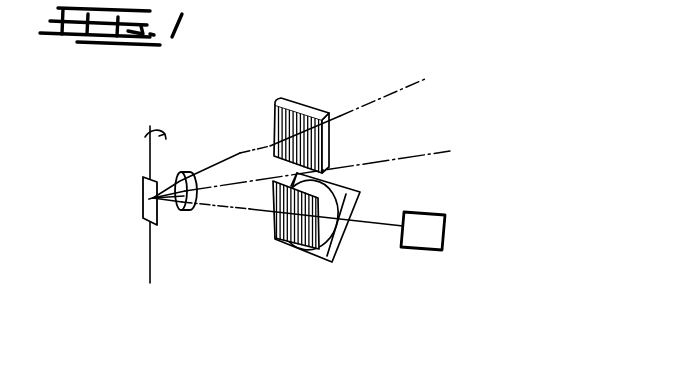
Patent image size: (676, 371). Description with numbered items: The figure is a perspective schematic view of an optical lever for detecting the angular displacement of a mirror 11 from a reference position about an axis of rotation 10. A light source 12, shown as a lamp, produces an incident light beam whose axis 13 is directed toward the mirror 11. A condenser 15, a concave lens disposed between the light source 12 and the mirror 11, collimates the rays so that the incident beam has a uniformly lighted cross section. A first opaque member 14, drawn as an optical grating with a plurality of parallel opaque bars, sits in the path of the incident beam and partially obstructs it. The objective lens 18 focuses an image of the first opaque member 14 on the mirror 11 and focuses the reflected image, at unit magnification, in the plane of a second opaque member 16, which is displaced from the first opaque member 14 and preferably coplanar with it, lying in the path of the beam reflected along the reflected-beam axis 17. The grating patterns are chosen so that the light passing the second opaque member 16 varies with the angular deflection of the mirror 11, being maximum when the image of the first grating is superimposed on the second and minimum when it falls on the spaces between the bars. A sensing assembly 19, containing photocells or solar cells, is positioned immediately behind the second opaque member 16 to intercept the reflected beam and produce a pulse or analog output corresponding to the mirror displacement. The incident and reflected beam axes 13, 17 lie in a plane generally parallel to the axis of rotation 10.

The axis of rotation 10 is at (148, 238).
The mirror 11 is at (143, 178).
The light source 12 is at (427, 218).
The axis of the incident light beam 13 is at (248, 212).
The first opaque member 14 is at (271, 236).
The condenser 15 is at (362, 193).
The second opaque member 16 is at (273, 111).
The axis of the reflected light beam 17 is at (226, 162).
The objective lens 18 is at (182, 171).
The sensing assembly 19 is at (302, 103).